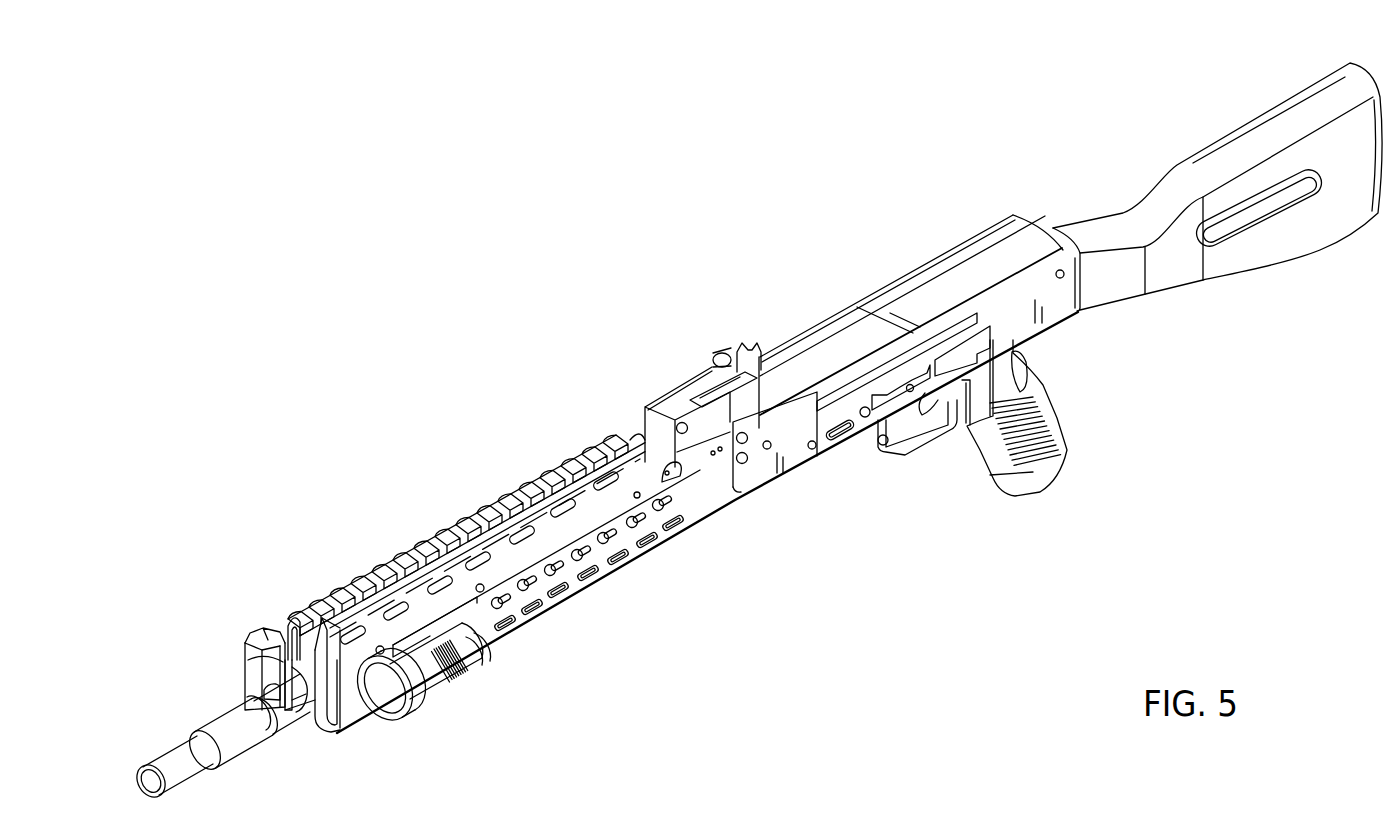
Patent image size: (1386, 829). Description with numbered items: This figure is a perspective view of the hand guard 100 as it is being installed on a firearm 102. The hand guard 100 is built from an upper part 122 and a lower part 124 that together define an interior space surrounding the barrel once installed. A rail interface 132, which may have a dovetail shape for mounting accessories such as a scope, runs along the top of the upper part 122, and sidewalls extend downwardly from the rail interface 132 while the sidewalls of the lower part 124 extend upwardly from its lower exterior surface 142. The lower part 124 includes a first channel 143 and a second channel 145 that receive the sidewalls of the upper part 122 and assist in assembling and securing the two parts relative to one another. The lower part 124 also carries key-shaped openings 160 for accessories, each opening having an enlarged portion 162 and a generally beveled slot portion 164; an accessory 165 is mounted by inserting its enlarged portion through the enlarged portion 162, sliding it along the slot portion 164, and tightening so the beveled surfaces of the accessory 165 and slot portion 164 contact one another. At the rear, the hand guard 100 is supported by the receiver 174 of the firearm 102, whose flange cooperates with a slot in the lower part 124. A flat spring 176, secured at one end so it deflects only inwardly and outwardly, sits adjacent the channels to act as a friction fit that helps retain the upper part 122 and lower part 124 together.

The hand guard 100 is at (486, 482).
The firearm 102 is at (820, 345).
The upper part 122 is at (291, 628).
The lower part 124 is at (344, 720).
The rail interface 132 is at (375, 572).
The lower exterior surface 142 is at (299, 730).
The first channel 143 is at (248, 638).
The second channel 145 is at (304, 725).
The key-shaped openings 160 is at (518, 616).
The enlarged portion 162 is at (643, 552).
The slot portion 164 is at (617, 560).
The accessory 165 is at (440, 670).
The receiver 174 is at (800, 463).
The spring 176 is at (680, 467).